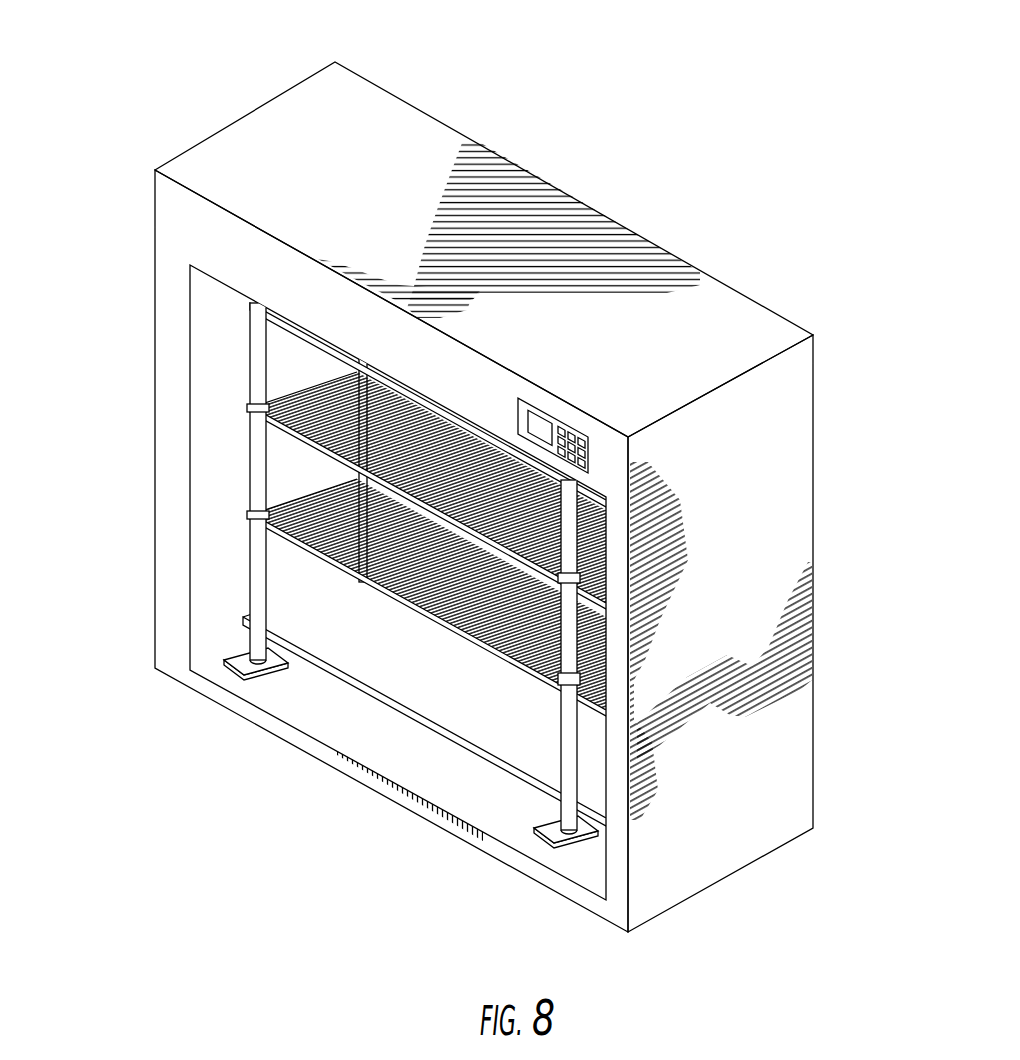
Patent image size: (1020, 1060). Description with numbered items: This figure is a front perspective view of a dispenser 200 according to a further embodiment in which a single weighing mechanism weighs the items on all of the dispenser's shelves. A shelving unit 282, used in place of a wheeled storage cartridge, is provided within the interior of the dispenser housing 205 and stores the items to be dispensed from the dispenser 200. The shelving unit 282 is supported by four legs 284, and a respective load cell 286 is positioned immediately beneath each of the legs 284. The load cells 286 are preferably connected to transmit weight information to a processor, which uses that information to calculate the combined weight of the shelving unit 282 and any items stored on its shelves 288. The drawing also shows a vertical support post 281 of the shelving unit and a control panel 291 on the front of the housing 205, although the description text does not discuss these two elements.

The dispenser 200 is at (602, 128).
The dispenser housing 205 is at (793, 537).
The support post 281 is at (255, 456).
The shelving unit 282 is at (483, 778).
The legs 284 is at (228, 665).
The load cell 286 is at (287, 672).
The shelves 288 is at (383, 673).
The control panel 291 is at (558, 413).